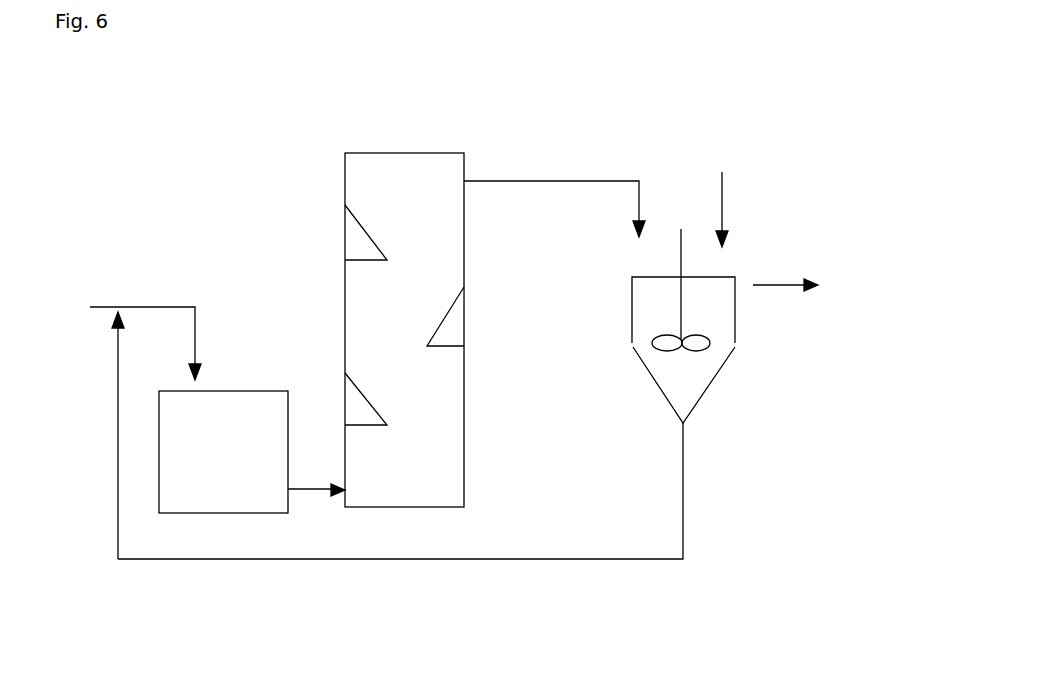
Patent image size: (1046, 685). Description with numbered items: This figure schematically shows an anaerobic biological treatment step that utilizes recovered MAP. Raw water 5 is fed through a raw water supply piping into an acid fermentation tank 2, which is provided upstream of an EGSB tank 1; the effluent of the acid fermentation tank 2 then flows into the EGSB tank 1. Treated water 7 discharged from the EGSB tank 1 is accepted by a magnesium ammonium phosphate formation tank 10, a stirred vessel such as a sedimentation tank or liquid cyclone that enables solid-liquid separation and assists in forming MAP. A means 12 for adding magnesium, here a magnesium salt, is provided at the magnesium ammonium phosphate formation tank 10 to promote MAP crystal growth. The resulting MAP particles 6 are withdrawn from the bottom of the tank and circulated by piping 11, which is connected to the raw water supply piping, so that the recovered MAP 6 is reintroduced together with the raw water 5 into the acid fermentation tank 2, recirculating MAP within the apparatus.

The EGSB tank 1 is at (455, 395).
The acid fermentation tank 2 is at (255, 403).
The raw water 5 is at (180, 307).
The MAP particles 6 is at (115, 513).
The treated water 7 is at (533, 162).
The magnesium ammonium phosphate formation tank 10 is at (718, 360).
The piping 11 is at (578, 559).
The means for adding magnesium, ammonium and/or phosphorus 12 is at (725, 213).